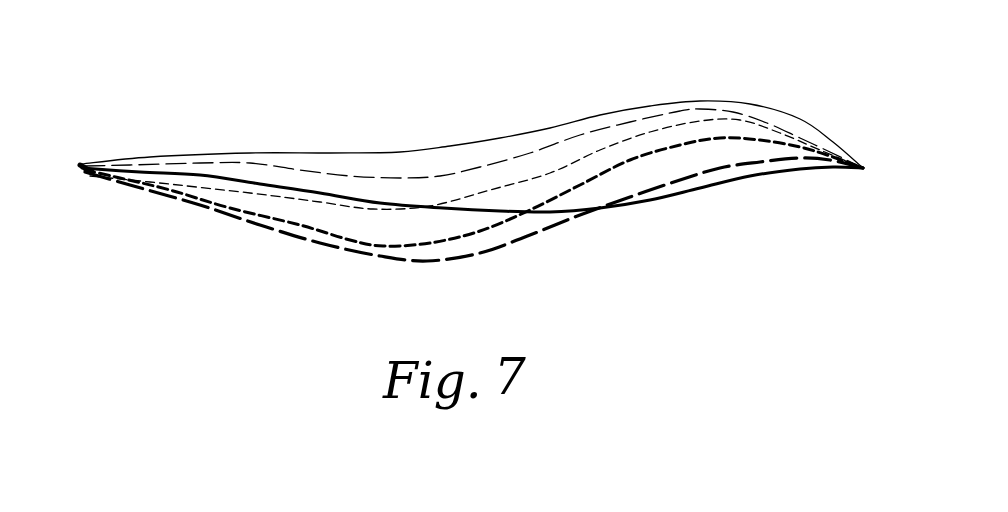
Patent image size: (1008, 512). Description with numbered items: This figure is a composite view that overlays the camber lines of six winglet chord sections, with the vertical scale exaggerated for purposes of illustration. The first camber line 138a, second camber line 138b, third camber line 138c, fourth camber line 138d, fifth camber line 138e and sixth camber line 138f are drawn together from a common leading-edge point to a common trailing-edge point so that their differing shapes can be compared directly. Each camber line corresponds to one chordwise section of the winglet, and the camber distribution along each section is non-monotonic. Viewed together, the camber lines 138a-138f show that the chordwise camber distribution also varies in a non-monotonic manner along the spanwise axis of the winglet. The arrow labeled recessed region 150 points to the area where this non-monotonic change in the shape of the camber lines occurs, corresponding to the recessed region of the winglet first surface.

The recessed region 150 is at (353, 152).
The first camber line 138a is at (683, 195).
The second camber line 138b is at (723, 167).
The third camber line 138c is at (770, 148).
The fourth camber line 138d is at (673, 126).
The fifth camber line 138e is at (611, 126).
The sixth camber line 138f is at (543, 130).